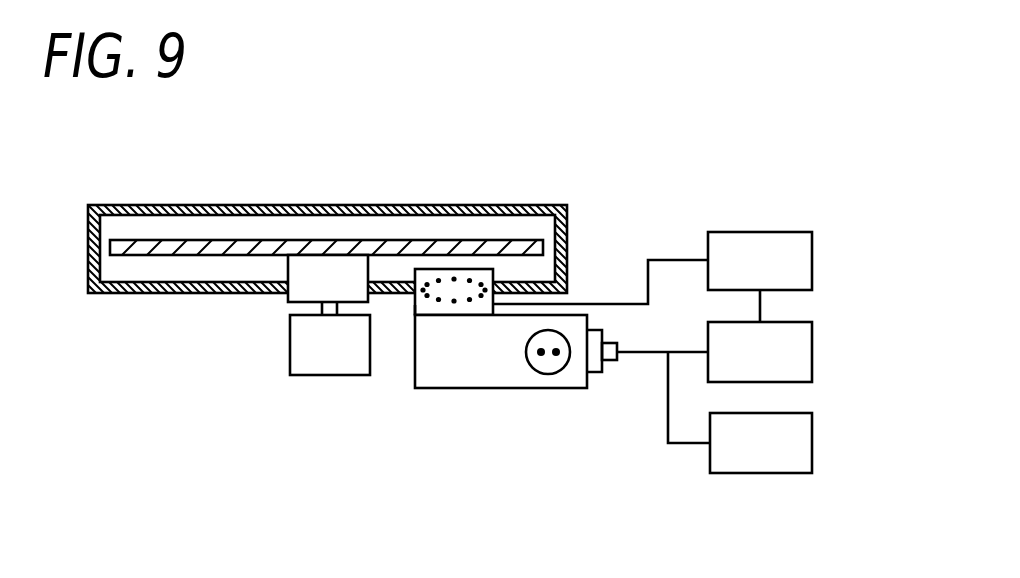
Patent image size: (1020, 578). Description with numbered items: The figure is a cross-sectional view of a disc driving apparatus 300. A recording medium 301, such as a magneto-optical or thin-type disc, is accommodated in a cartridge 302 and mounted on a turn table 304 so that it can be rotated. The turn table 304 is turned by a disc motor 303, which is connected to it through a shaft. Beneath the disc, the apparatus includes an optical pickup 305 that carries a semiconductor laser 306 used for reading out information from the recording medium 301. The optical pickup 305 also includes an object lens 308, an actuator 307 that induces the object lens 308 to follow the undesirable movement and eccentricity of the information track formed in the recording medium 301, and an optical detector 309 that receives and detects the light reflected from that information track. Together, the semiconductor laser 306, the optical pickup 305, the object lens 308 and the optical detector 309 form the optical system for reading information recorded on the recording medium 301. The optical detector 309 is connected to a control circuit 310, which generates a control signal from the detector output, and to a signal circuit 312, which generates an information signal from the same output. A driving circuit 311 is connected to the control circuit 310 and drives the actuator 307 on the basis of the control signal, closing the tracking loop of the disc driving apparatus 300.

The disc driving apparatus 300 is at (213, 566).
The recording medium 301 is at (130, 250).
The cartridge 302 is at (157, 293).
The disc motor 303 is at (310, 365).
The turn table 304 is at (303, 290).
The optical pickup 305 is at (441, 382).
The semiconductor laser 306 is at (552, 368).
The actuator 307 is at (412, 306).
The object lens 308 is at (458, 281).
The optical detector 309 is at (597, 375).
The control circuit 310 is at (800, 344).
The driving circuit 311 is at (800, 250).
The signal circuit 312 is at (800, 431).